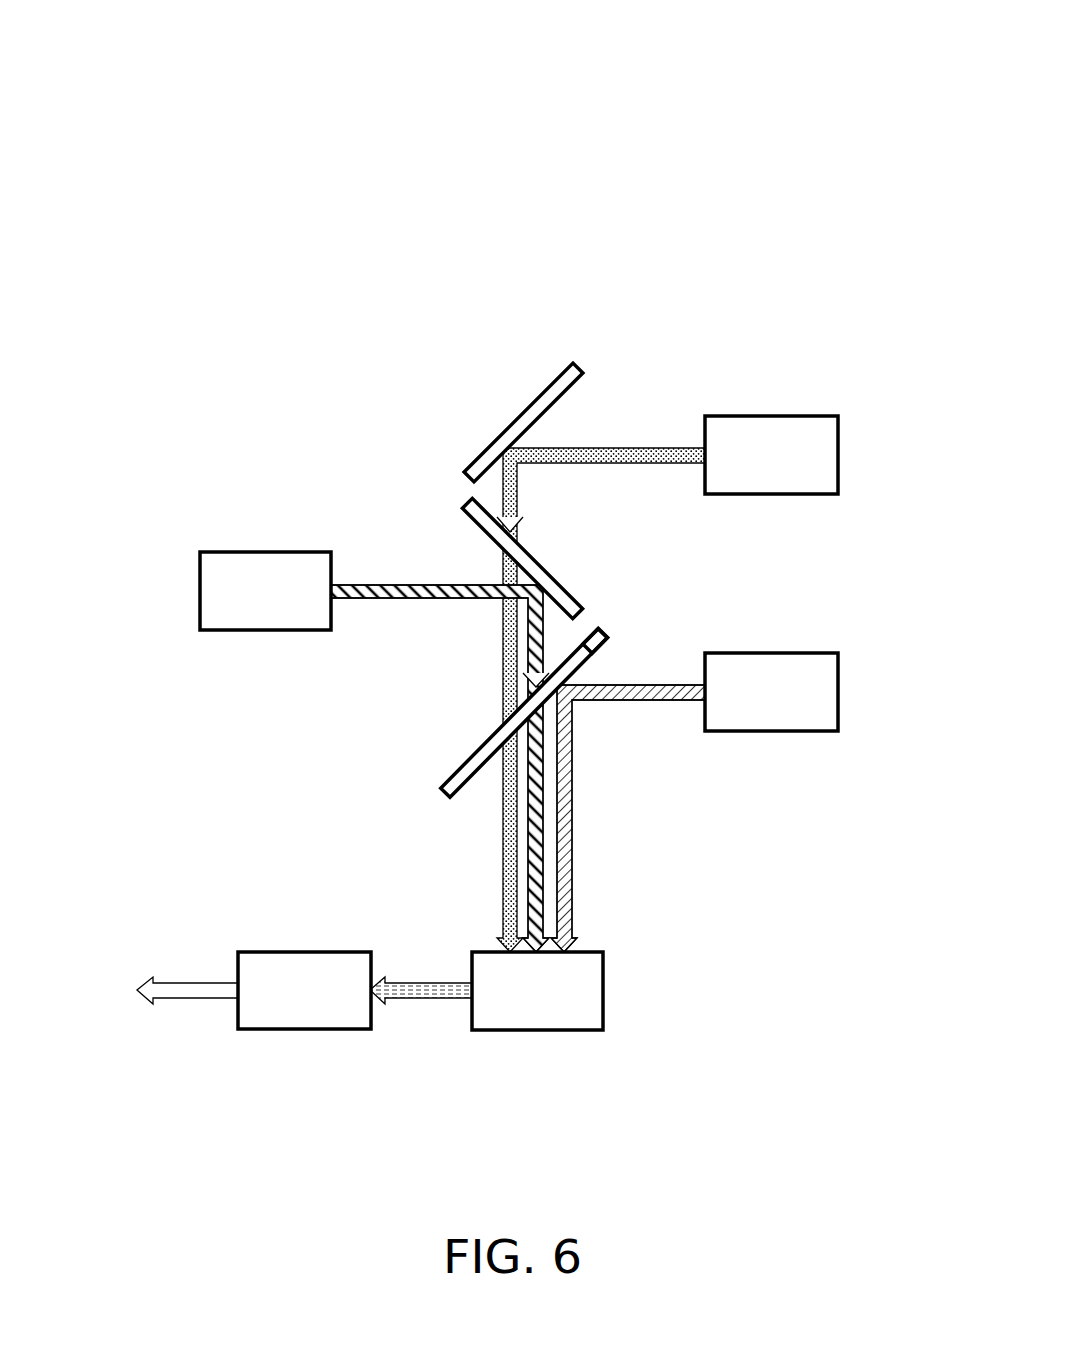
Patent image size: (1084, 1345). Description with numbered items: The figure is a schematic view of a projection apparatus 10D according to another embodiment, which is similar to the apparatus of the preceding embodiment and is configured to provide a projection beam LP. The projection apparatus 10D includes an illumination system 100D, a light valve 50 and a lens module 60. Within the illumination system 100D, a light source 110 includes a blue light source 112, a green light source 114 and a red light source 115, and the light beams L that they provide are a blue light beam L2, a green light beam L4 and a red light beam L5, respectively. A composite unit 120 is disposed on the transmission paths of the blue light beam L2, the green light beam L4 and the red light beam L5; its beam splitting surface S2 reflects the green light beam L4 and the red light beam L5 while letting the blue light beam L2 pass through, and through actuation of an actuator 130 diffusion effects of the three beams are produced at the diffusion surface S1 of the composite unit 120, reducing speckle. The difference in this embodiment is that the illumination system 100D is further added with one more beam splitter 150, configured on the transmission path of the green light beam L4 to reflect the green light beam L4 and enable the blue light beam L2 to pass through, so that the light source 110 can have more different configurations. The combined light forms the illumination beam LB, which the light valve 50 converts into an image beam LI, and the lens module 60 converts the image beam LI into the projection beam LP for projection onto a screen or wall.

The projection apparatus 10D is at (499, 559).
The illumination system 100D is at (398, 294).
The light source 110 is at (154, 15).
The blue light source 112 is at (820, 458).
The green light source 114 is at (217, 591).
The red light source 115 is at (820, 696).
The light beams L is at (313, 15).
The blue light beam L2 is at (665, 455).
The green light beam L4 is at (385, 584).
The red light beam L5 is at (665, 690).
The beam splitter 150 is at (472, 468).
The composite unit 120 is at (455, 780).
The actuator 130 is at (602, 640).
The diffusion surface S1 is at (479, 780).
The second surface S2 is at (474, 747).
The illumination beam LB is at (465, 909).
The light valve 50 is at (535, 1012).
The image beam LI is at (423, 995).
The lens module 60 is at (303, 1012).
The projection beam LP is at (197, 992).